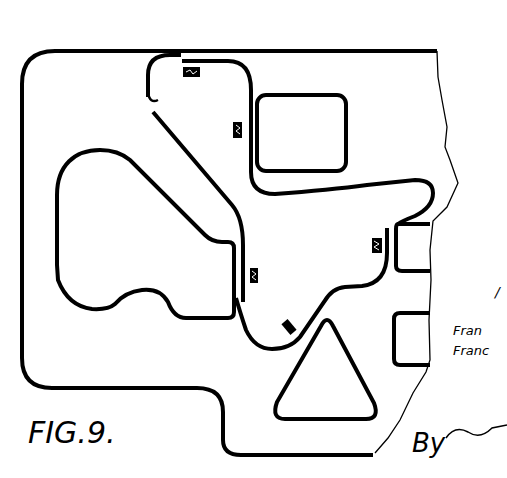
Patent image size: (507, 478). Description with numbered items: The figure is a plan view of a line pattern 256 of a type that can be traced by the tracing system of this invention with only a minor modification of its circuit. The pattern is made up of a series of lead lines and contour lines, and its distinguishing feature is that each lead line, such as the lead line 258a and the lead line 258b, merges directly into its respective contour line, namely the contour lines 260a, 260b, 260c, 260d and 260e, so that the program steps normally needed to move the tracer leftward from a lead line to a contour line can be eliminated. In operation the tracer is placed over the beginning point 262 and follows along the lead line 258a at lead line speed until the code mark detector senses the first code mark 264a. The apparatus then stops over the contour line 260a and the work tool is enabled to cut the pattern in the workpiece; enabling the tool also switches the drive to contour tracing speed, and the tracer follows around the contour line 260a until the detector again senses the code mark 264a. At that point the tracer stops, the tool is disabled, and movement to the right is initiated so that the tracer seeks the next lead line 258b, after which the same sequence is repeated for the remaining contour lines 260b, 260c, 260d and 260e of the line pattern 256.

The line pattern 256 is at (102, 50).
The contour line indicia 260a is at (275, 32).
The lead line indicia 258a is at (147, 77).
The lead line indicia 258b is at (255, 80).
The beginning point 262 is at (265, 212).
The code mark 264a is at (197, 78).
The contour line indicia 260b is at (348, 112).
The contour line indicia 260c is at (397, 260).
The contour line indicia 260d is at (288, 387).
The contour line indicia 260e is at (183, 216).